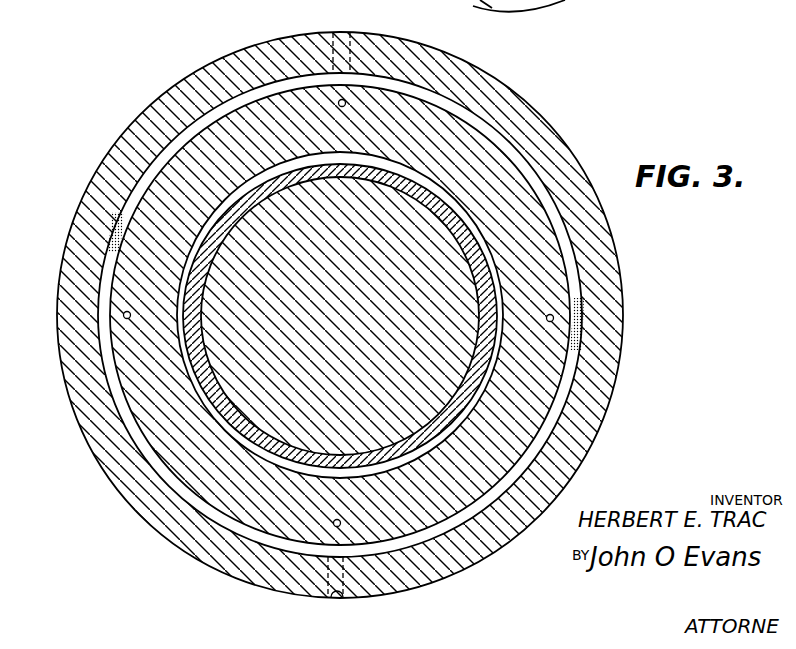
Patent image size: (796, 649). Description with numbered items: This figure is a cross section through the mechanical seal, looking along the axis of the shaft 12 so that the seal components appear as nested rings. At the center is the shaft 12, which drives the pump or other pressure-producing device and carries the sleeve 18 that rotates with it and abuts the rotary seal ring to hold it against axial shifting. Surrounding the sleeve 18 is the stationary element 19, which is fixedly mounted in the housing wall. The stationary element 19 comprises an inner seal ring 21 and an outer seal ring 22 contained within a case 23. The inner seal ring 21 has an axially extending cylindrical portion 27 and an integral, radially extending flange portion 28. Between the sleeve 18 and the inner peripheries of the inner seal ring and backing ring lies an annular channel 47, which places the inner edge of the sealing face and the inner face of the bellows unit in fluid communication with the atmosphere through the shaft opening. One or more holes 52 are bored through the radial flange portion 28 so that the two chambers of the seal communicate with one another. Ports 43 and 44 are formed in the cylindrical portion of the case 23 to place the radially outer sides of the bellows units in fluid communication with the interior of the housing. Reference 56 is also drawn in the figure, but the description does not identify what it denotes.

The shaft 12 is at (430, 295).
The sleeve 18 is at (389, 173).
The stationary element 19 is at (614, 244).
The inner seal ring 21 is at (512, 163).
The outer seal ring 22 is at (552, 376).
The case 23 is at (127, 474).
The cylindrical portion 27 is at (195, 420).
The flange portion 28 is at (220, 133).
The port 43 is at (337, 33).
The port 44 is at (520, 12).
The annular channel 47 is at (183, 293).
The hole 52 is at (342, 100).
The cover plate 56 is at (480, 2).